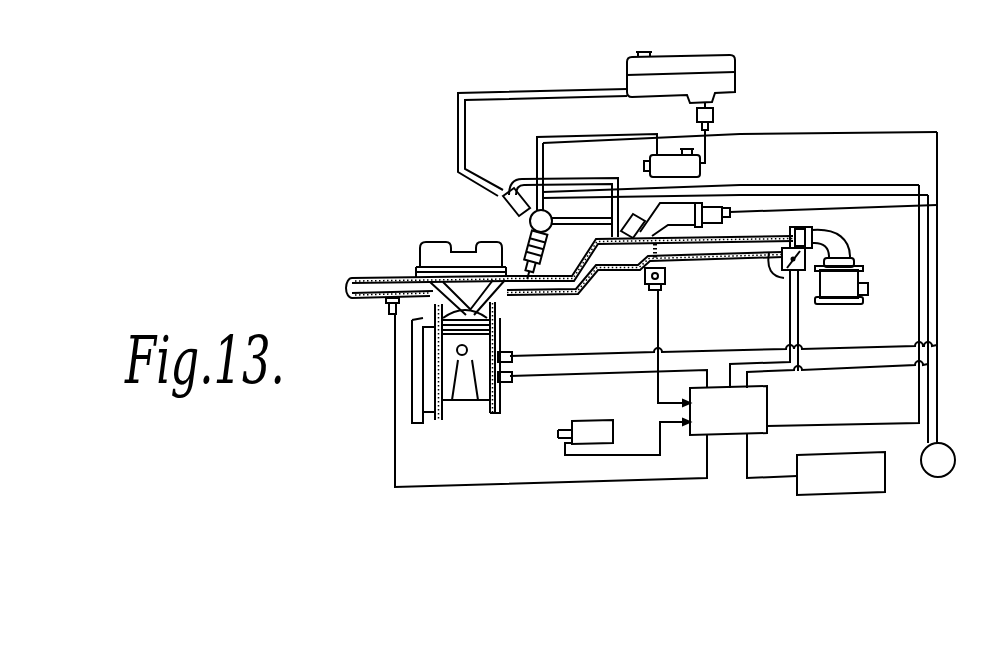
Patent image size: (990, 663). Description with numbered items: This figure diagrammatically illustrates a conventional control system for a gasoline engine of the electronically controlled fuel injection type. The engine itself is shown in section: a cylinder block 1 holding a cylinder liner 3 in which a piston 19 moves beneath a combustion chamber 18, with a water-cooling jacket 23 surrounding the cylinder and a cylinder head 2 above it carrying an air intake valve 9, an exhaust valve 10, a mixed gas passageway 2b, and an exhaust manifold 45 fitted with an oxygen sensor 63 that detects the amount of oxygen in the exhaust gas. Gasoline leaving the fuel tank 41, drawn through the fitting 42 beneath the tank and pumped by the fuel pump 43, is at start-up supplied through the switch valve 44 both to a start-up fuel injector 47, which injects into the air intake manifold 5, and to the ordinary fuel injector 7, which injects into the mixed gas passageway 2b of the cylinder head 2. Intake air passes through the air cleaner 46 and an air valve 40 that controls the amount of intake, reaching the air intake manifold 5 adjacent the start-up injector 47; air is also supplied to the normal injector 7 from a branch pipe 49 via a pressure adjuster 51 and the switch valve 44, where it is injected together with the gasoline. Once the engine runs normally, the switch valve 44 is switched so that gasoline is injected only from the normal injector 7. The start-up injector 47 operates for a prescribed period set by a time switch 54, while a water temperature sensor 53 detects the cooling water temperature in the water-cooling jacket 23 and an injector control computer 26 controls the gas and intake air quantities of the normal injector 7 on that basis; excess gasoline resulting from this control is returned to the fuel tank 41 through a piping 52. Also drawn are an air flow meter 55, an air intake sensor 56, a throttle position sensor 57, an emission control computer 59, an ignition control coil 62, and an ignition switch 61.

The cylinder block 1 is at (416, 398).
The cylinder head 2 is at (425, 242).
The mixed gas passageway 2b is at (515, 287).
The cylinder liner 3 is at (436, 356).
The air intake manifold 5 is at (571, 294).
The ordinary fuel injector 7 is at (537, 265).
The air intake valve 9 is at (504, 324).
The exhaust valve 10 is at (420, 320).
The combustion chamber 18 is at (438, 336).
The piston 19 is at (466, 412).
The water-cooling jacket 23 is at (430, 416).
The injector control computer 26 is at (767, 400).
The air valve 40 is at (726, 216).
The fuel tank 41 is at (737, 66).
The fuel filter 42 is at (716, 116).
The fuel pump 43 is at (702, 174).
The switch valve 44 is at (553, 218).
The exhaust manifold 45 is at (388, 278).
The air cleaner 46 is at (866, 280).
The start-up fuel injector 47 is at (638, 236).
The branch pipe 49 is at (536, 175).
The pressure adjuster 51 is at (505, 190).
The piping 52 is at (457, 124).
The water temperature sensor 53 is at (513, 377).
The time switch 54 is at (513, 357).
The air flow meter 55 is at (769, 258).
The air intake sensor 56 is at (832, 240).
The throttle position sensor 57 is at (650, 286).
The emission control computer 59 is at (873, 455).
The ignition switch 61 is at (944, 444).
The ignition control coil 62 is at (600, 420).
The oxygen sensor 63 is at (388, 310).